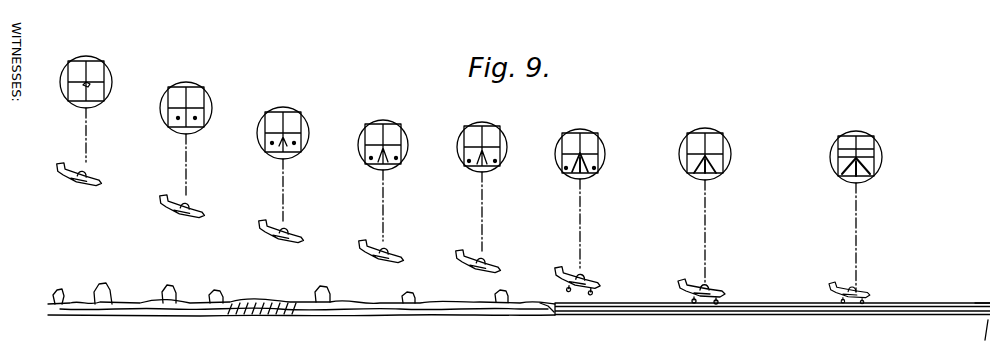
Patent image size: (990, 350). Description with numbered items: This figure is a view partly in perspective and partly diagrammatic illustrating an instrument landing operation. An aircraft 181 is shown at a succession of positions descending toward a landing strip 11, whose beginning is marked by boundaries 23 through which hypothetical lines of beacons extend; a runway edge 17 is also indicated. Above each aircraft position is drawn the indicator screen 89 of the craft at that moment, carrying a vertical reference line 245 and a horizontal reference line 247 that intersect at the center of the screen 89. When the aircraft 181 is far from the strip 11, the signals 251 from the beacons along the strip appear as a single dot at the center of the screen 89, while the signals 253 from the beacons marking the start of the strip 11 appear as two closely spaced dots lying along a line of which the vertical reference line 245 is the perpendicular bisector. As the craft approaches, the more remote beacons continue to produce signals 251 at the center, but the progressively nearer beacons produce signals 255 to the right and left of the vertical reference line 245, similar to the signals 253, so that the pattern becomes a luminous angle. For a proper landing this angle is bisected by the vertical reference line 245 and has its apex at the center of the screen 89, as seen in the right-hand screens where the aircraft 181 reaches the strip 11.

The strip 11 is at (946, 294).
The runway edge 17 is at (976, 303).
The boundaries 23 is at (553, 305).
The indicator screen 89 is at (287, 108).
The aircraft 181 is at (72, 178).
The vertical reference line 245 is at (853, 152).
The horizontal reference line 247 is at (374, 147).
The signals from beacons along the strip 251 is at (87, 83).
The signals from beacons marking the start of the strip 253 is at (84, 88).
The signals from nearer beacons 255 is at (588, 163).